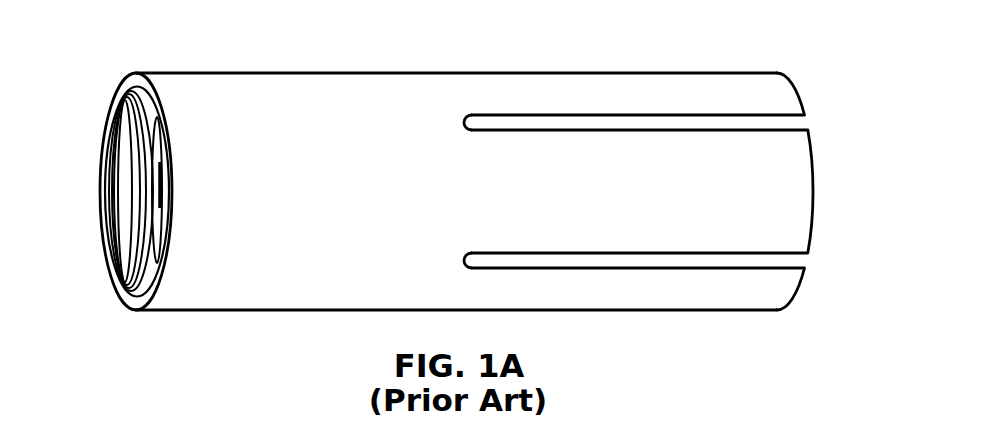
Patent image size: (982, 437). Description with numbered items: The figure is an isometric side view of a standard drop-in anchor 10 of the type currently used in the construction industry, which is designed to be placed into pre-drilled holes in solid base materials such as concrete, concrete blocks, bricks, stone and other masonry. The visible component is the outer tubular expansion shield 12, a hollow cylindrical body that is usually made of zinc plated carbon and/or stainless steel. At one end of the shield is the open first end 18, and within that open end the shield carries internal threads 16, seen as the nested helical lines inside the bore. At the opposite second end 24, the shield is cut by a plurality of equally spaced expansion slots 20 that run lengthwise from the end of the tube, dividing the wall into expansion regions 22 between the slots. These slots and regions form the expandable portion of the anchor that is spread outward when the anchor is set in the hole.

The drop-in anchor 10 is at (470, 169).
The outer tubular expansion shield 12 is at (508, 181).
The internal threads 16 is at (153, 197).
The open first end 18 is at (118, 168).
The expansion slots 20 is at (790, 122).
The expansion regions 22 is at (786, 93).
The second end 24 is at (840, 181).